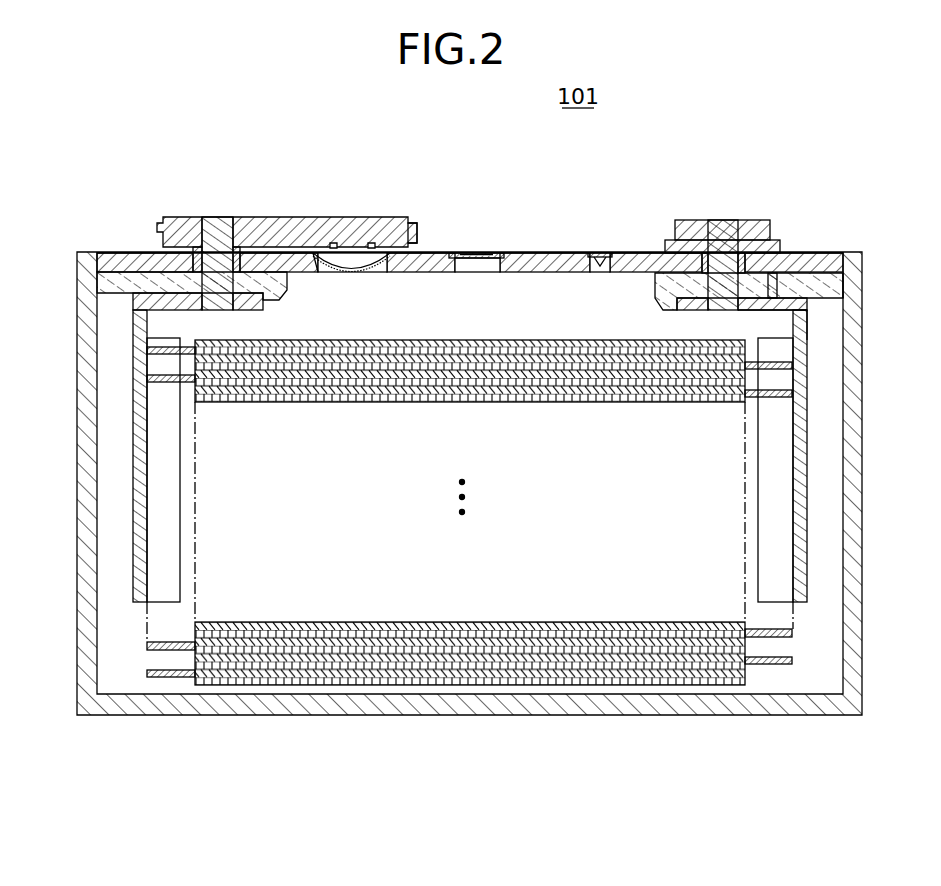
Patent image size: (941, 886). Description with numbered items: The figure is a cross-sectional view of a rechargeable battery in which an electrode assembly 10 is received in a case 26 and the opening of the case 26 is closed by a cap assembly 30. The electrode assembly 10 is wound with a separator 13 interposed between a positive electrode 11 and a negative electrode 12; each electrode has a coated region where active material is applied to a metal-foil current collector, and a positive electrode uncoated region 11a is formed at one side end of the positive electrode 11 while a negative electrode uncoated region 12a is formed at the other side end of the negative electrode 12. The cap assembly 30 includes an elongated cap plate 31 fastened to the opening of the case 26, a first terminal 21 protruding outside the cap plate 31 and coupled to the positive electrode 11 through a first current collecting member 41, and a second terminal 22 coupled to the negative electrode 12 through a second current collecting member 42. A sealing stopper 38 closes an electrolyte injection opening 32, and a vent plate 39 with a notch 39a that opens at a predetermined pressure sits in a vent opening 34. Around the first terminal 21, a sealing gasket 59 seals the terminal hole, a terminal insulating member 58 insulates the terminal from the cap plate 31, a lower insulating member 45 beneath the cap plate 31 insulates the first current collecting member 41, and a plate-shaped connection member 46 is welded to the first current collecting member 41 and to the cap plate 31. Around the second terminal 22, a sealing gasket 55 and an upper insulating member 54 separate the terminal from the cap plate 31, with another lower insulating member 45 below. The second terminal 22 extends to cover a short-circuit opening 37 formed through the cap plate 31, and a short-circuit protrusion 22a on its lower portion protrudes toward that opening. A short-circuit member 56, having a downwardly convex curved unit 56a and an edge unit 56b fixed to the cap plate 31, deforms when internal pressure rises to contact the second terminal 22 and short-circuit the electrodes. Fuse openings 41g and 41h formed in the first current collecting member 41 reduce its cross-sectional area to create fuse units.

The electrode assembly 10 is at (560, 686).
The positive electrode 11 is at (652, 664).
The positive electrode uncoated region 11a is at (775, 666).
The negative electrode 12 is at (283, 686).
The negative electrode uncoated region 12a is at (162, 680).
The separator 13 is at (473, 690).
The first terminal 21 is at (757, 222).
The second terminal 22 is at (178, 217).
The short-circuit protrusion 22a is at (383, 243).
The case 26 is at (852, 520).
The cap assembly 30 is at (437, 253).
The cap plate 31 is at (825, 257).
The electrolyte injection opening 32 is at (600, 273).
The vent opening 34 is at (478, 273).
The short-circuit opening 37 is at (324, 254).
The sealing stopper 38 is at (601, 253).
The vent plate 39 is at (500, 254).
The notch 39a is at (473, 253).
The first current collecting member 41 is at (800, 372).
The fuse opening 41g is at (762, 312).
The fuse opening 41h is at (808, 330).
The second current collecting member 42 is at (140, 355).
The lower insulating member 45 is at (108, 287).
The connection member 46 is at (843, 278).
The upper insulating member 54 is at (417, 230).
The sealing gasket 55 is at (140, 258).
The short-circuit member 56 is at (351, 266).
The curved unit 56a is at (346, 270).
The edge unit 56b is at (388, 272).
The terminal insulating member 58 is at (773, 277).
The sealing gasket 59 is at (660, 247).